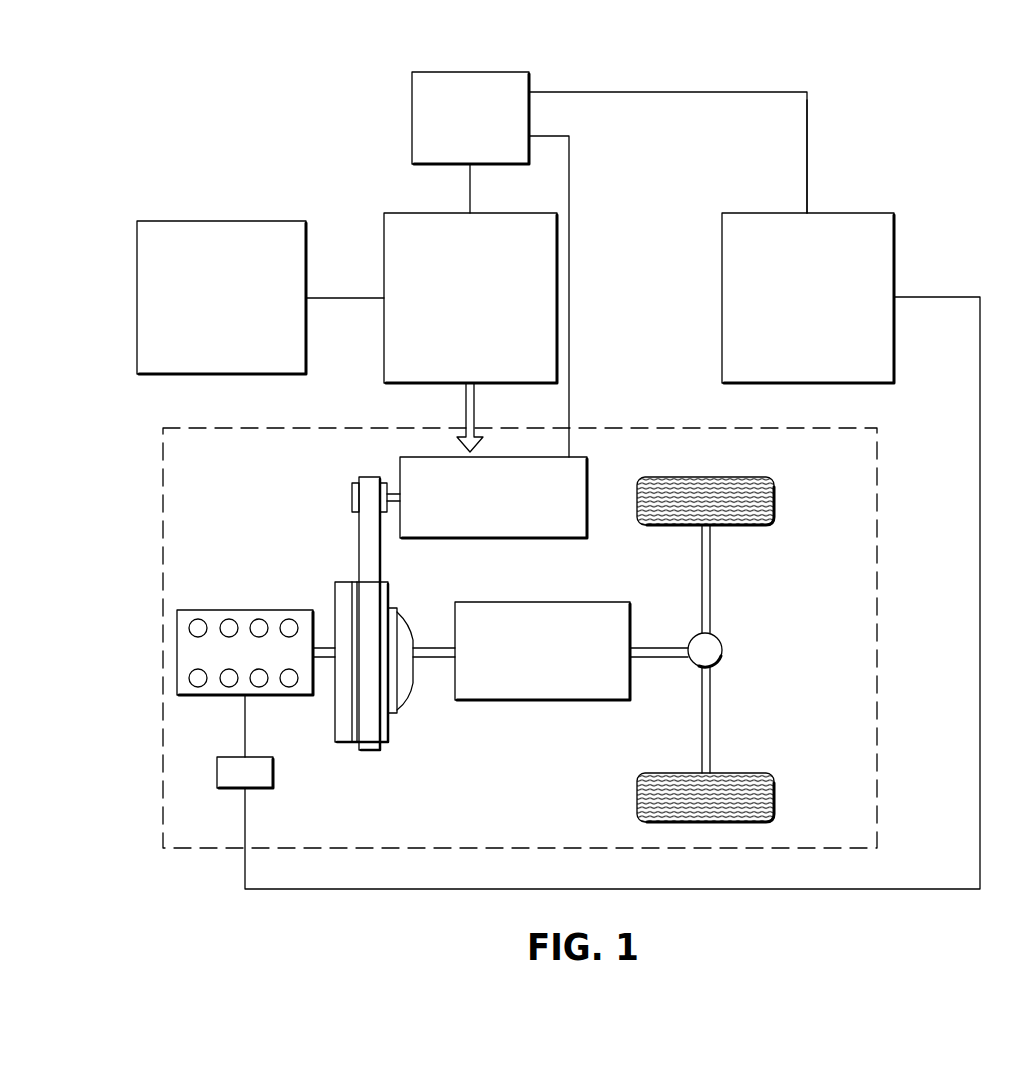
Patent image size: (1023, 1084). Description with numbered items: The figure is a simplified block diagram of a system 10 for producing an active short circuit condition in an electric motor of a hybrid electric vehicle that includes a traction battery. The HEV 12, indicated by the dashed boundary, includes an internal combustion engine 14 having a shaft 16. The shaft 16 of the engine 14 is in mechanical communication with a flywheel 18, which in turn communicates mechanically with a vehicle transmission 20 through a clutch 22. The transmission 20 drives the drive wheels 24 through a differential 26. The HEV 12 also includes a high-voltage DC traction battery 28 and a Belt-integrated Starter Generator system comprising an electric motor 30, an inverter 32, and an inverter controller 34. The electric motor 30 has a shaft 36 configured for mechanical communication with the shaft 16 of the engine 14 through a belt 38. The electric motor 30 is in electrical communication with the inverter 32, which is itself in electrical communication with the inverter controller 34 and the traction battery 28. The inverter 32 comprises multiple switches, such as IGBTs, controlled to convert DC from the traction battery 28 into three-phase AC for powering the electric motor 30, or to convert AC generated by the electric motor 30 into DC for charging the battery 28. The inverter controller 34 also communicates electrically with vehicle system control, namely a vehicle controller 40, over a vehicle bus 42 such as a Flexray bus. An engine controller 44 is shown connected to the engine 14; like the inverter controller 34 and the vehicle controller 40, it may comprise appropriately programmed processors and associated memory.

The system 10 is at (905, 94).
The HEV 12 is at (134, 403).
The internal combustion engine 14 is at (177, 650).
The shaft 16 is at (322, 659).
The flywheel 18 is at (345, 580).
The vehicle transmission 20 is at (542, 602).
The clutch 22 is at (405, 706).
The drive wheels 24 is at (737, 477).
The differential 26 is at (722, 652).
The high-voltage DC traction battery 28 is at (211, 221).
The electric motor 30 is at (590, 497).
The inverter 32 is at (384, 270).
The inverter controller 34 is at (412, 118).
The shaft 36 is at (393, 490).
The belt 38 is at (358, 532).
The vehicle controller 40 is at (895, 260).
The vehicle bus 42 is at (808, 160).
The engine controller 44 is at (216, 772).